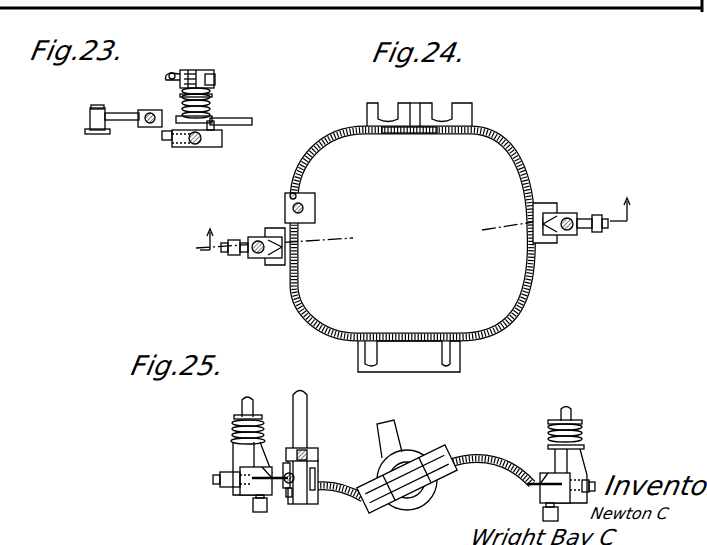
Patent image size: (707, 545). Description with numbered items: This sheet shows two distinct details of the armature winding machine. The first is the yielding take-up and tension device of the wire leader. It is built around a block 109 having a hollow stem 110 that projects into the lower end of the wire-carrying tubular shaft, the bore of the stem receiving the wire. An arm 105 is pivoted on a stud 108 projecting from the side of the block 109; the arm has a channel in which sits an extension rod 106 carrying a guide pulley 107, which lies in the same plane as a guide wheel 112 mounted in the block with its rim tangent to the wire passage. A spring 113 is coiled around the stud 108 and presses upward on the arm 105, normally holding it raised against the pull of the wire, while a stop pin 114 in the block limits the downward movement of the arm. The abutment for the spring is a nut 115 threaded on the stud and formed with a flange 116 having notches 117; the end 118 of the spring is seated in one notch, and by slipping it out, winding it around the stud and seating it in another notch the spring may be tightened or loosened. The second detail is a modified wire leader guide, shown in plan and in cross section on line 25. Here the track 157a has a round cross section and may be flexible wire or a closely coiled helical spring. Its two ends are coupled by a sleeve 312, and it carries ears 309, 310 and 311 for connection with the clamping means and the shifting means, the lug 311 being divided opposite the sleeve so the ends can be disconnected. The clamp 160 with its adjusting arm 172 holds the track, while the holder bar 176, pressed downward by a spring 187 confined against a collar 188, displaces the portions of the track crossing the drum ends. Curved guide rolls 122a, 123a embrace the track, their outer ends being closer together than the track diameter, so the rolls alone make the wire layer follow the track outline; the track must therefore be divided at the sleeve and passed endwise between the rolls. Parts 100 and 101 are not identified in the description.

In FIG. 24, the section line 25 is at (414, 230).
In FIG. 24, the clamp block / rod 100 is at (318, 208).
In FIG. 25, the clamp block / rod 100 is at (307, 394).
In FIG. 24, the clamp screw / block 101 is at (307, 196).
In FIG. 25, the clamp screw / block 101 is at (316, 456).
In FIG. 23, the arm 105 is at (160, 124).
In FIG. 23, the extension rod 106 is at (118, 114).
In FIG. 23, the guide pulley 107 is at (93, 133).
In FIG. 23, the stud 108 is at (183, 96).
In FIG. 23, the block 109 is at (215, 139).
In FIG. 23, the hollow stem 110 is at (194, 145).
In FIG. 23, the guide wheel 112 is at (169, 141).
In FIG. 23, the spring 113 is at (211, 99).
In FIG. 23, the stop pin 114 is at (224, 114).
In FIG. 23, the nut 115 is at (200, 72).
In FIG. 23, the flange 116 is at (217, 81).
In FIG. 23, the notches 117 is at (168, 80).
In FIG. 23, the end of the spring 118 is at (173, 72).
In FIG. 25, the guide roll 122a is at (287, 462).
In FIG. 25, the guide roll 123a is at (288, 498).
In FIG. 24, the track 157a is at (517, 153).
In FIG. 25, the track 157a is at (495, 473).
In FIG. 25, the clamp 160 is at (442, 464).
In FIG. 25, the adjusting arm 172 is at (392, 433).
In FIG. 24, the holder bar 176 is at (253, 259).
In FIG. 25, the holder bar 176 is at (249, 404).
In FIG. 25, the spring 187 is at (233, 418).
In FIG. 25, the collar 188 is at (231, 438).
In FIG. 24, the ear 309 is at (420, 364).
In FIG. 24, the ear 310 is at (288, 232).
In FIG. 25, the ear 310 is at (280, 492).
In FIG. 24, the ear 311 is at (430, 110).
In FIG. 24, the sleeve 312 is at (415, 133).